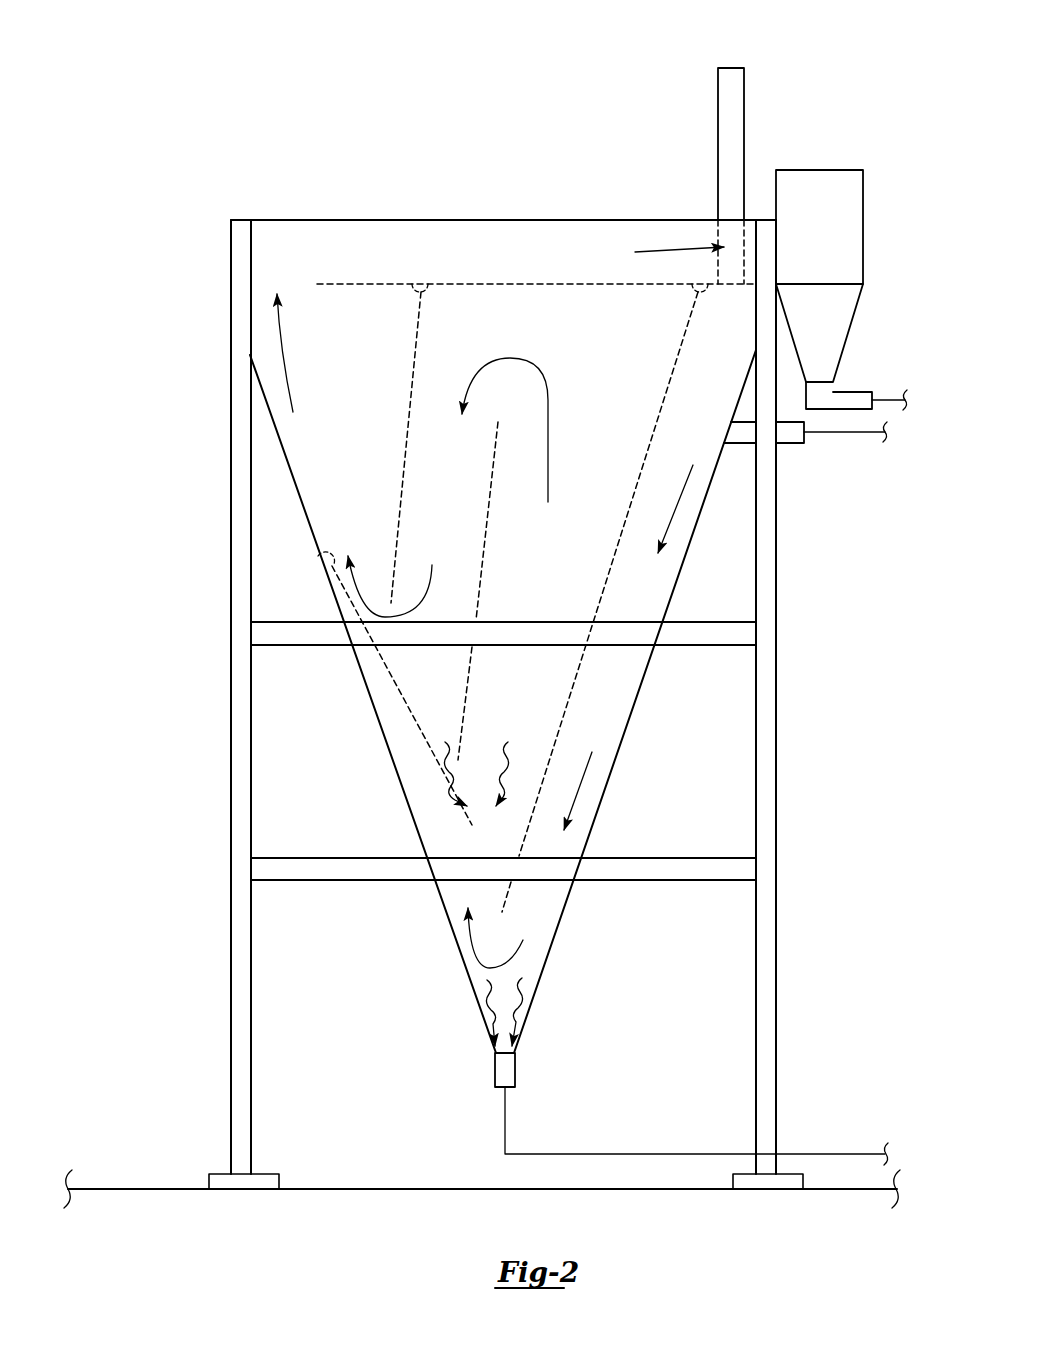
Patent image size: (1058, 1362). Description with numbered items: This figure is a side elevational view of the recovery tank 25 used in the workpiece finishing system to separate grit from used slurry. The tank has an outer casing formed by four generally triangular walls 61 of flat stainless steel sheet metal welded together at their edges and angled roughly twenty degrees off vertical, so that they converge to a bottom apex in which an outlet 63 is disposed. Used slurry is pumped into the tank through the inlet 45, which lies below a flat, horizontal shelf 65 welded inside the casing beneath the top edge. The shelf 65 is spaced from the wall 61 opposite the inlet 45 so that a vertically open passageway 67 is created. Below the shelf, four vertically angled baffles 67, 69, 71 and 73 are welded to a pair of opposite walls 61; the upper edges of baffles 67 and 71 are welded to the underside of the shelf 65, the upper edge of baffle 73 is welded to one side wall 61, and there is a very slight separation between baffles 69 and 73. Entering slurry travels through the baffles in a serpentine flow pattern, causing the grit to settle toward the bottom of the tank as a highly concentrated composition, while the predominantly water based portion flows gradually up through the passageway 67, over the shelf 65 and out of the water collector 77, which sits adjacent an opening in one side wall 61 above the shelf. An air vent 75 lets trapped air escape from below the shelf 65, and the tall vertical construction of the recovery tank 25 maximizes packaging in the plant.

The recovery tank 25 is at (434, 176).
The inlet 45 is at (790, 436).
The walls 61 is at (301, 503).
The outlet 63 is at (503, 1070).
The shelf 65 is at (520, 284).
The baffle 67 is at (656, 420).
The baffle 69 is at (477, 593).
The baffle 71 is at (403, 466).
The baffle 73 is at (411, 718).
The air vent 75 is at (735, 135).
The water collector 77 is at (845, 192).